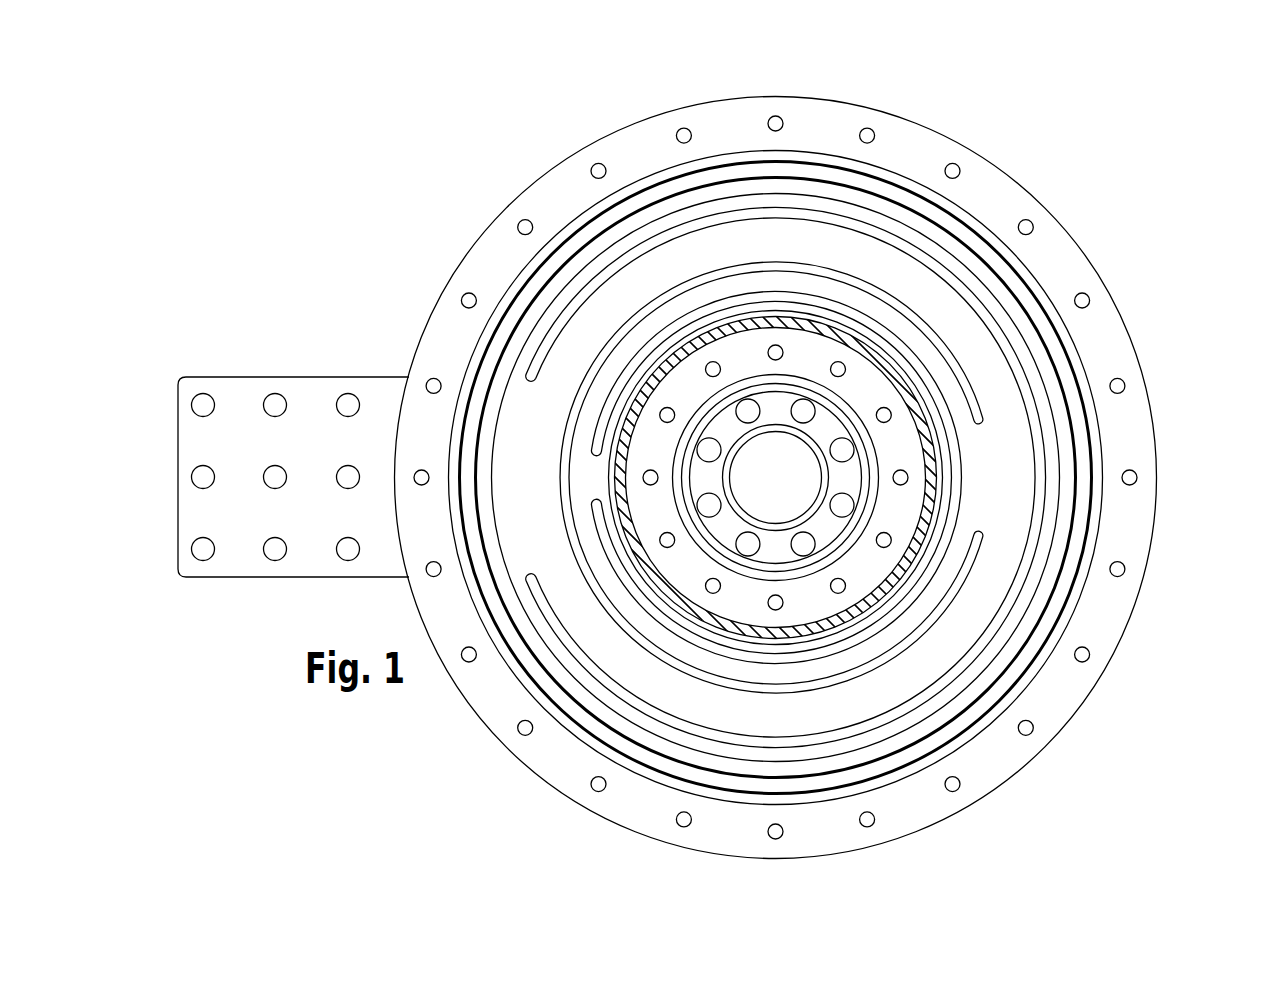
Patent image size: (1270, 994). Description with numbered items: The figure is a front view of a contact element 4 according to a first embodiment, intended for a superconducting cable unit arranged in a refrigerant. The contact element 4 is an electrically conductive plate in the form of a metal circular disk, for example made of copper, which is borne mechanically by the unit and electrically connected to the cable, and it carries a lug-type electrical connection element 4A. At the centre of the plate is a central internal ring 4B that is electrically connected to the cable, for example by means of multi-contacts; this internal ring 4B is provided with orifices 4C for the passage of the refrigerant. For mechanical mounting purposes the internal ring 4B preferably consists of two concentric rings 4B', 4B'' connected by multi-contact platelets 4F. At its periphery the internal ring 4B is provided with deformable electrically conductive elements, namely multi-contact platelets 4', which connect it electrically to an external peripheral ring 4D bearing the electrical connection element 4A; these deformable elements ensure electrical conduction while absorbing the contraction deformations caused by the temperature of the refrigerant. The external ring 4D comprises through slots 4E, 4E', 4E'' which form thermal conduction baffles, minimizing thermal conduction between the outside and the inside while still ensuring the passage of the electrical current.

The contact element 4 is at (776, 478).
The multi-contact platelets 4' is at (777, 612).
The electrical connection element 4A is at (238, 432).
The central internal ring 4B is at (909, 478).
The concentric ring 4B' is at (922, 443).
The concentric ring 4B'' is at (962, 478).
The orifices 4C is at (803, 401).
The external peripheral ring 4D is at (994, 599).
The through slot 4E is at (776, 357).
The through slot 4E' is at (771, 371).
The through slot 4E'' is at (786, 410).
The multi-contact platelets 4F is at (875, 485).